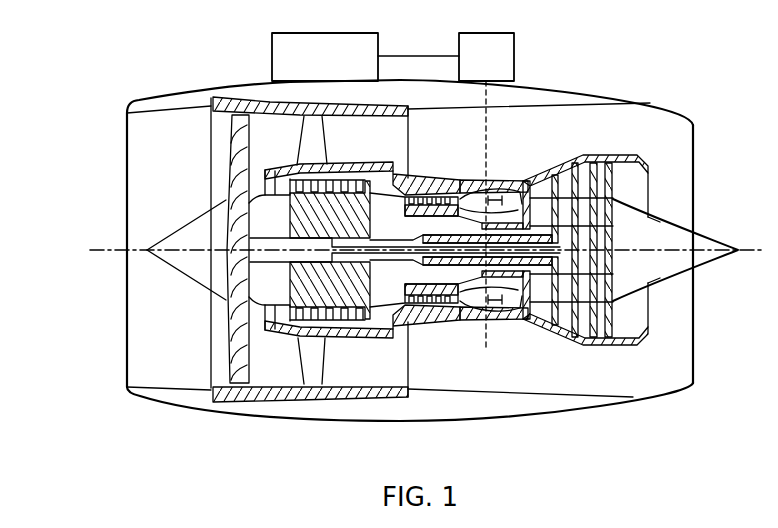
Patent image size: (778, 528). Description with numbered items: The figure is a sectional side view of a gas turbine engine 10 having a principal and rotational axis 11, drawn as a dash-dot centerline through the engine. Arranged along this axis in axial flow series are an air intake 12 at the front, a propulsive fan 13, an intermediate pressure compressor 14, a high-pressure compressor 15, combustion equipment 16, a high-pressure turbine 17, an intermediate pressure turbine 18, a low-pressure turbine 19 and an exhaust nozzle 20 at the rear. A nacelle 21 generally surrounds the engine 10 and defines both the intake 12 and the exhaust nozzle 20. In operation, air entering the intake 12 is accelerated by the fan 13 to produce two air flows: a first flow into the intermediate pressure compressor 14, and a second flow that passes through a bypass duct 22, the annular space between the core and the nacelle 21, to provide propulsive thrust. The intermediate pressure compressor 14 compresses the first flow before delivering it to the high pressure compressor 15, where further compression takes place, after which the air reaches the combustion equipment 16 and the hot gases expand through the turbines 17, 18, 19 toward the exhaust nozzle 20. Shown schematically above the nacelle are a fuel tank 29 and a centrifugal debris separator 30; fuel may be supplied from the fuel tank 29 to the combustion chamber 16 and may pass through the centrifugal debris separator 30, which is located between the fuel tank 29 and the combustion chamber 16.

The gas turbine engine 10 is at (107, 137).
The principal and rotational axis 11 is at (136, 249).
The air intake 12 is at (181, 107).
The propulsive fan 13 is at (229, 350).
The intermediate pressure compressor 14 is at (350, 314).
The high-pressure compressor 15 is at (430, 198).
The combustion equipment 16 is at (480, 309).
The high-pressure turbine 17 is at (528, 319).
The intermediate pressure turbine 18 is at (557, 173).
The low-pressure turbine 19 is at (573, 330).
The exhaust nozzle 20 is at (692, 385).
The nacelle 21 is at (540, 84).
The bypass duct 22 is at (351, 147).
The fuel tank 29 is at (313, 67).
The centrifugal debris separator 30 is at (474, 67).